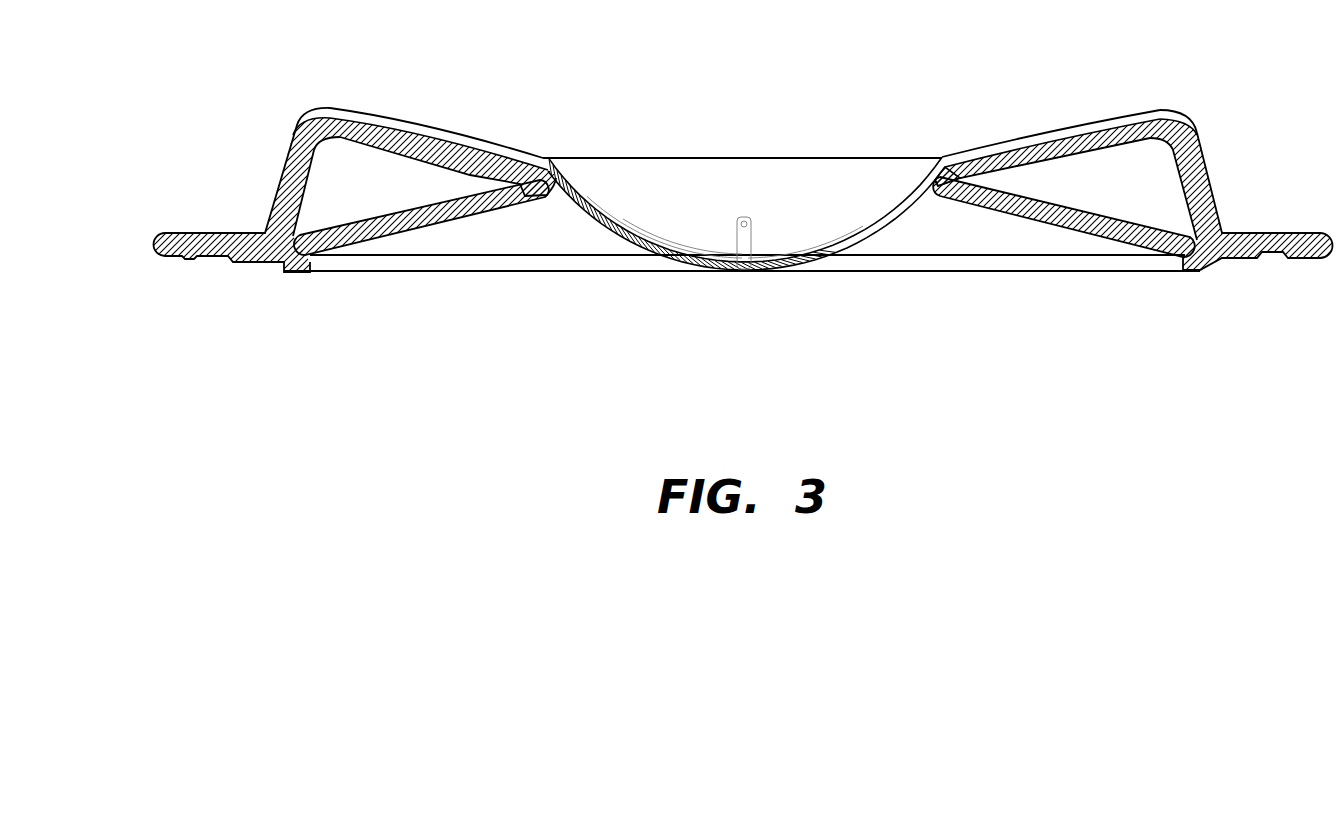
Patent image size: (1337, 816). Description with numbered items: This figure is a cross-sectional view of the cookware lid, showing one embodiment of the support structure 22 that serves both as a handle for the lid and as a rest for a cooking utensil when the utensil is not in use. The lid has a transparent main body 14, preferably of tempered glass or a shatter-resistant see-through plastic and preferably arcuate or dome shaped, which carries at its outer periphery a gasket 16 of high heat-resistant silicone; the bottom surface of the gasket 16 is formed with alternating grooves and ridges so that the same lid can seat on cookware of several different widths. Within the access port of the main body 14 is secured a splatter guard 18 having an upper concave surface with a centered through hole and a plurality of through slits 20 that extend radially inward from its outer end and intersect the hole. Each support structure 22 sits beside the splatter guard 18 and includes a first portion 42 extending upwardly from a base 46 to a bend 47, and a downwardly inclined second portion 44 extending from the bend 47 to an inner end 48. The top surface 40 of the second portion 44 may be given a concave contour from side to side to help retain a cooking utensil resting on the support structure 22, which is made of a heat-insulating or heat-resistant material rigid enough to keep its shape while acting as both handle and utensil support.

The main body 14 is at (390, 222).
The gasket 16 is at (193, 238).
The splatter guard 18 is at (745, 168).
The through slits 20 is at (752, 232).
The support structure 22 is at (292, 161).
The top surface 40 is at (385, 122).
The first portion 42 is at (1207, 177).
The second portion 44 is at (1050, 150).
The base 46 is at (1210, 233).
The bend 47 is at (1160, 118).
The inner end 48 is at (929, 173).